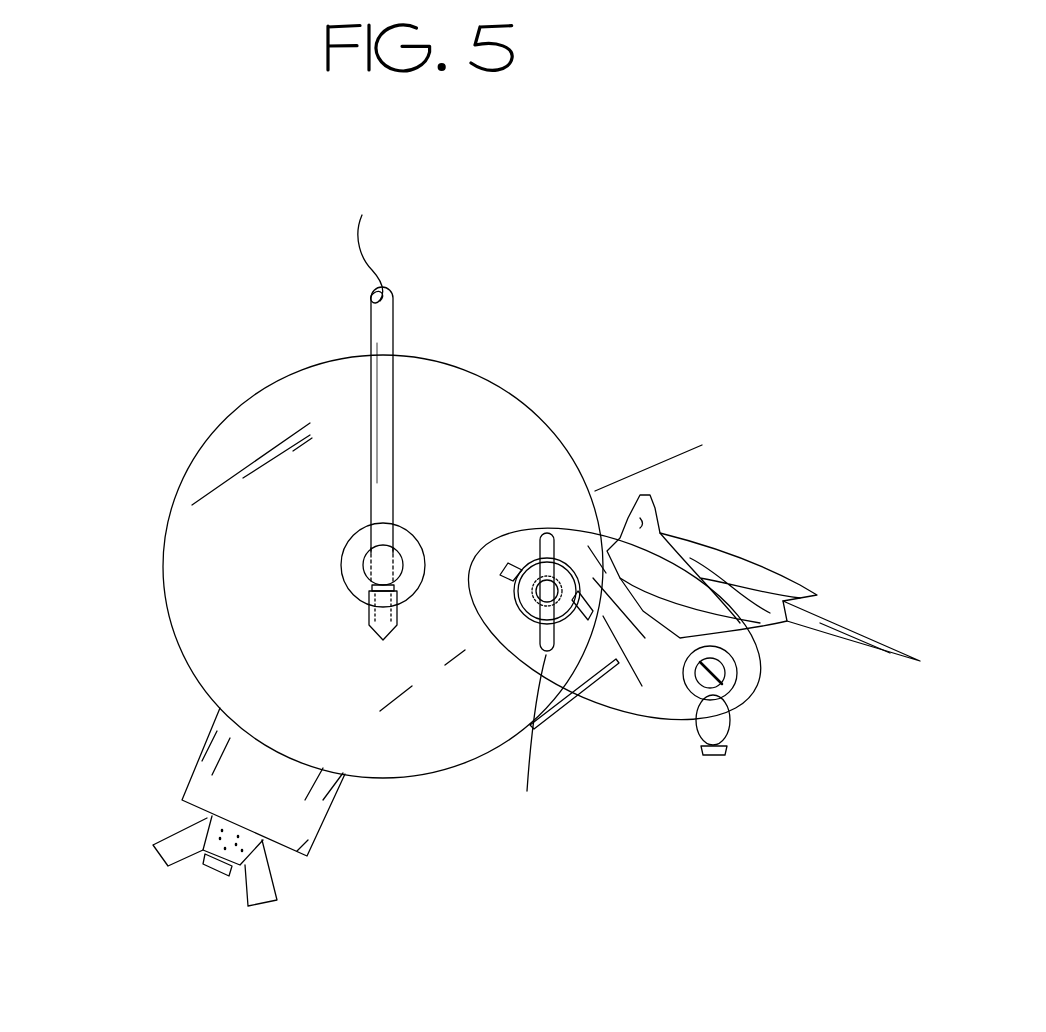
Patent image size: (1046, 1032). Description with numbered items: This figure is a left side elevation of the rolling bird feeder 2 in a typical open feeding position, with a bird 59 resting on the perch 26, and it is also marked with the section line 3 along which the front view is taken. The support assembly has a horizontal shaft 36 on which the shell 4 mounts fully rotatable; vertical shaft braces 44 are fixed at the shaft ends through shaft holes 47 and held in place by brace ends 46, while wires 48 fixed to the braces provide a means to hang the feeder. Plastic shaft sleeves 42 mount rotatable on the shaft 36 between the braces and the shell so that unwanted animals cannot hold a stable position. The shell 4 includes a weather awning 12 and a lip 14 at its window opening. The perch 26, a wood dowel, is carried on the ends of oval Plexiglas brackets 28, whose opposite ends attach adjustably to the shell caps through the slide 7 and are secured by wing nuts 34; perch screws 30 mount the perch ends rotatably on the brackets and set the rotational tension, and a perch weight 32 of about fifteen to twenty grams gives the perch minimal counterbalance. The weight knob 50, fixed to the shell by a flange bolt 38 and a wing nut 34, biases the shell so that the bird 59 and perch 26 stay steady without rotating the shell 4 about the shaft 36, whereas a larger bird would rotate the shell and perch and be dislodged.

The rolling bird feeder 2 is at (555, 363).
The section line 3- 3 is at (376, 254).
The shell 4 is at (218, 432).
The slide 7 is at (503, 568).
The weather awning 12 is at (648, 468).
The lip 14 is at (567, 692).
The perch 26 is at (742, 664).
The brackets 28 is at (632, 715).
The perch screws 30 is at (730, 683).
The perch weight 32 is at (733, 727).
The wing nuts 34 is at (76, 862).
The horizontal shaft 36 is at (366, 590).
The flange bolt 38 is at (207, 866).
The shaft sleeves 42 is at (345, 560).
The vertical shaft braces 44 is at (394, 338).
The brace ends 46 is at (378, 630).
The shaft holes 47 is at (398, 553).
The wires 48 is at (360, 260).
The weight knob 50 is at (198, 752).
The bird 59 is at (730, 548).